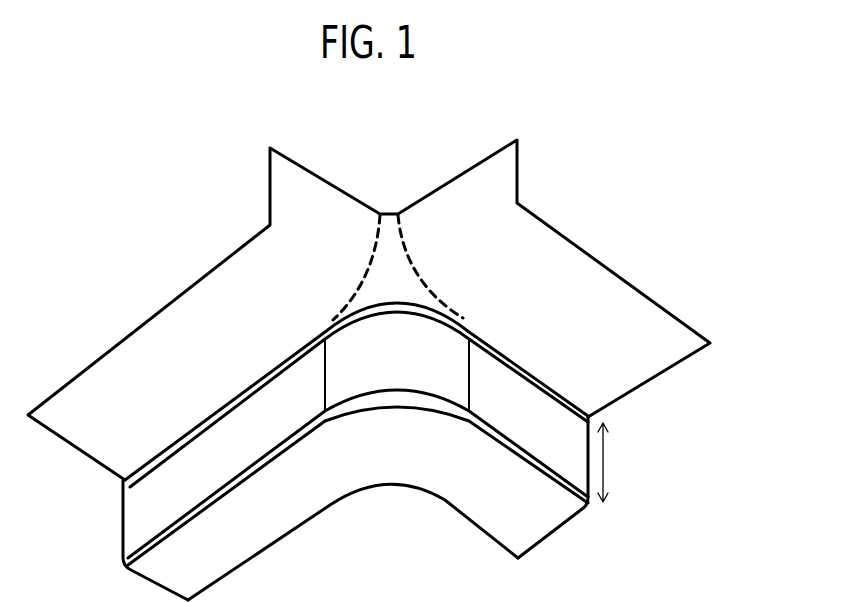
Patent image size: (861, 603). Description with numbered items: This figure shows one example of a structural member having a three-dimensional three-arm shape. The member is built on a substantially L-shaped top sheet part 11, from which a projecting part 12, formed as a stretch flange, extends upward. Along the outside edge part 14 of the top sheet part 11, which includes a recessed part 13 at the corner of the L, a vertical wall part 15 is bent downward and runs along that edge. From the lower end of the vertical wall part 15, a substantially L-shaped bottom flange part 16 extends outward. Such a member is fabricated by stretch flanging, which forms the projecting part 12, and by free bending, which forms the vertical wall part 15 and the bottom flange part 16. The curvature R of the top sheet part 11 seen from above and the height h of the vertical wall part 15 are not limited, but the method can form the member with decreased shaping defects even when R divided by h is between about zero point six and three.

The top sheet part 11 is at (105, 422).
The projecting part 12 is at (345, 190).
The recessed part 13 is at (397, 302).
The outside edge part 14 is at (512, 362).
The vertical wall part 15 is at (588, 462).
The bottom flange part 16 is at (378, 493).
The curvature R is at (380, 308).
The height h is at (616, 463).